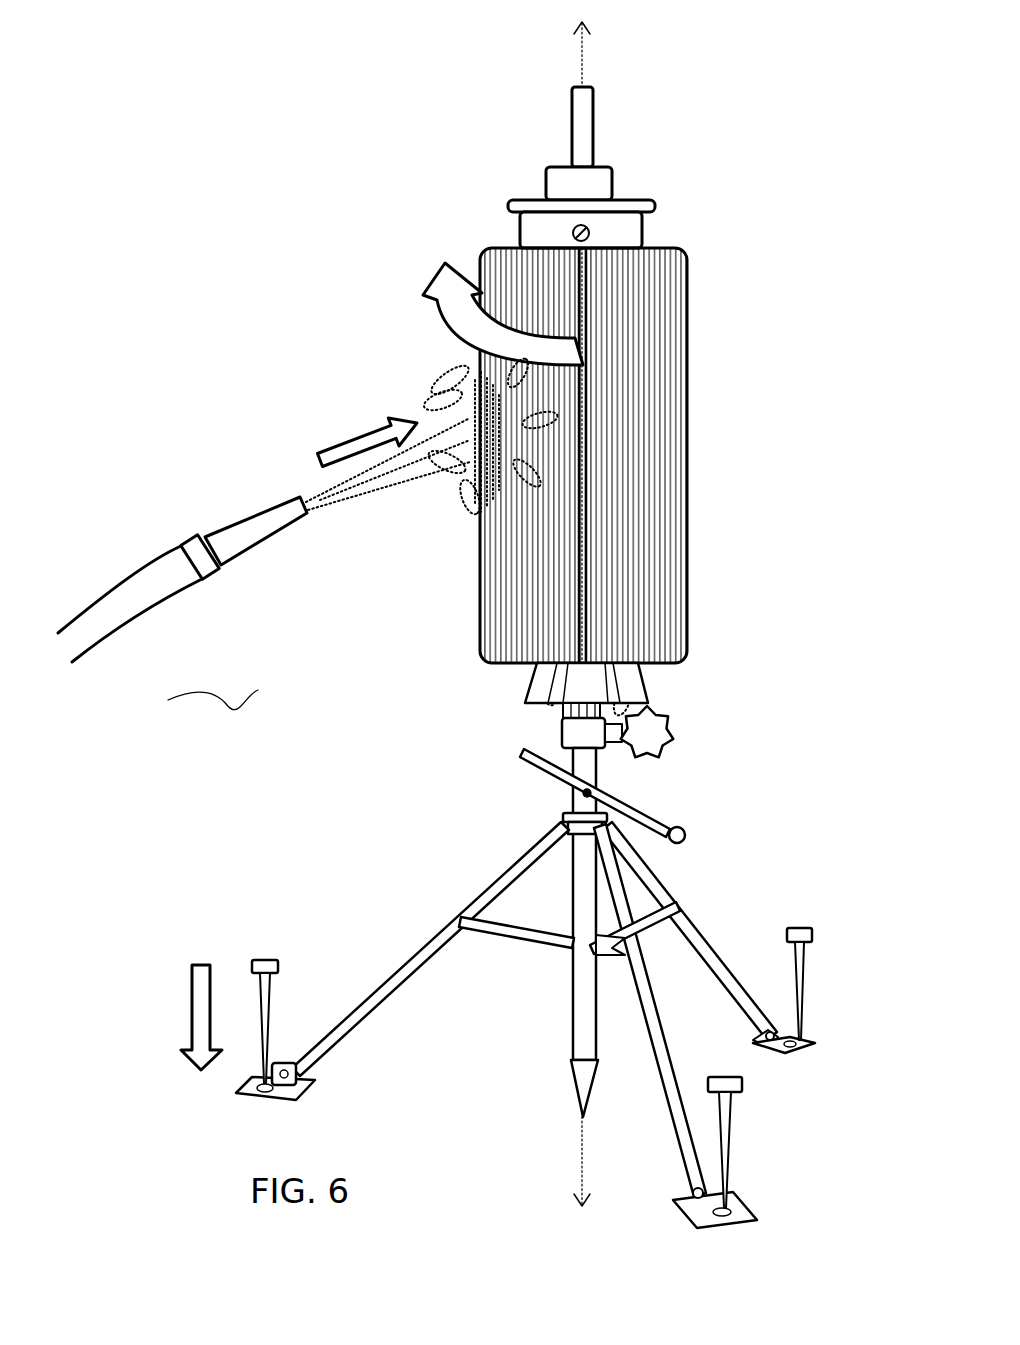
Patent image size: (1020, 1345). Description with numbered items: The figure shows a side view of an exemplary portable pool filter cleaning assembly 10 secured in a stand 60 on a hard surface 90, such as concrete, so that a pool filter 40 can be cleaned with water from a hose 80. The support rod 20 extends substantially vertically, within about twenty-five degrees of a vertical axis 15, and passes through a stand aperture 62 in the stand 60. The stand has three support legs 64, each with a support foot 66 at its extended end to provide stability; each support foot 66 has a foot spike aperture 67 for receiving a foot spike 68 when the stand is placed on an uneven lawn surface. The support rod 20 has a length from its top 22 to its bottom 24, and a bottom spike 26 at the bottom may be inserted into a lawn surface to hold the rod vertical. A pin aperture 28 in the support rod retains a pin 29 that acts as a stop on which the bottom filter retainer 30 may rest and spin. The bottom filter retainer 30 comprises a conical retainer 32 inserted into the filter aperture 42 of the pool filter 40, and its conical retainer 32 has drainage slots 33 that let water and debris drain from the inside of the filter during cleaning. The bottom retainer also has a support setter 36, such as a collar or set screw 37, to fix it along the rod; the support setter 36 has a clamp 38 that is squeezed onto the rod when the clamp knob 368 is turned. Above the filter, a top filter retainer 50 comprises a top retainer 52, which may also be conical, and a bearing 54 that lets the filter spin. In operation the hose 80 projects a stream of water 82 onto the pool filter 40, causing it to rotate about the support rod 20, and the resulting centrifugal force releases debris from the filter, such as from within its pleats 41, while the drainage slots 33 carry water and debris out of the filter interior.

The portable pool filter cleaning assembly 10 is at (510, 154).
The vertical axis 15 is at (575, 58).
The support rod 20 is at (589, 949).
The top of the support rod 22 is at (590, 90).
The bottom of the support rod 24 is at (533, 1101).
The bottom spike 26 is at (583, 1100).
The pin aperture 28 is at (567, 812).
The pin 29 is at (677, 843).
The bottom filter retainer 30 is at (576, 689).
The conical retainer 32 is at (557, 688).
The drainage slots 33 is at (640, 698).
The support setter 36 is at (578, 733).
The set screw 37 is at (235, 712).
The clamp 38 is at (630, 825).
The pool filter 40 is at (589, 460).
The pleats 41 is at (627, 552).
The filter aperture 42 is at (657, 668).
The top filter retainer 50 is at (532, 200).
The top retainer 52 is at (622, 205).
The bearing 54 is at (615, 172).
The stand 60 is at (481, 1011).
The stand aperture 62 is at (563, 828).
The support legs 64 is at (407, 952).
The support foot 66 is at (237, 1090).
The foot spike aperture 67 is at (267, 1080).
The foot spike 68 is at (268, 958).
The hose 80 is at (258, 523).
The stream of water 82 is at (318, 465).
The hard surface 90 is at (445, 1180).
The clamp knob 368 is at (655, 730).